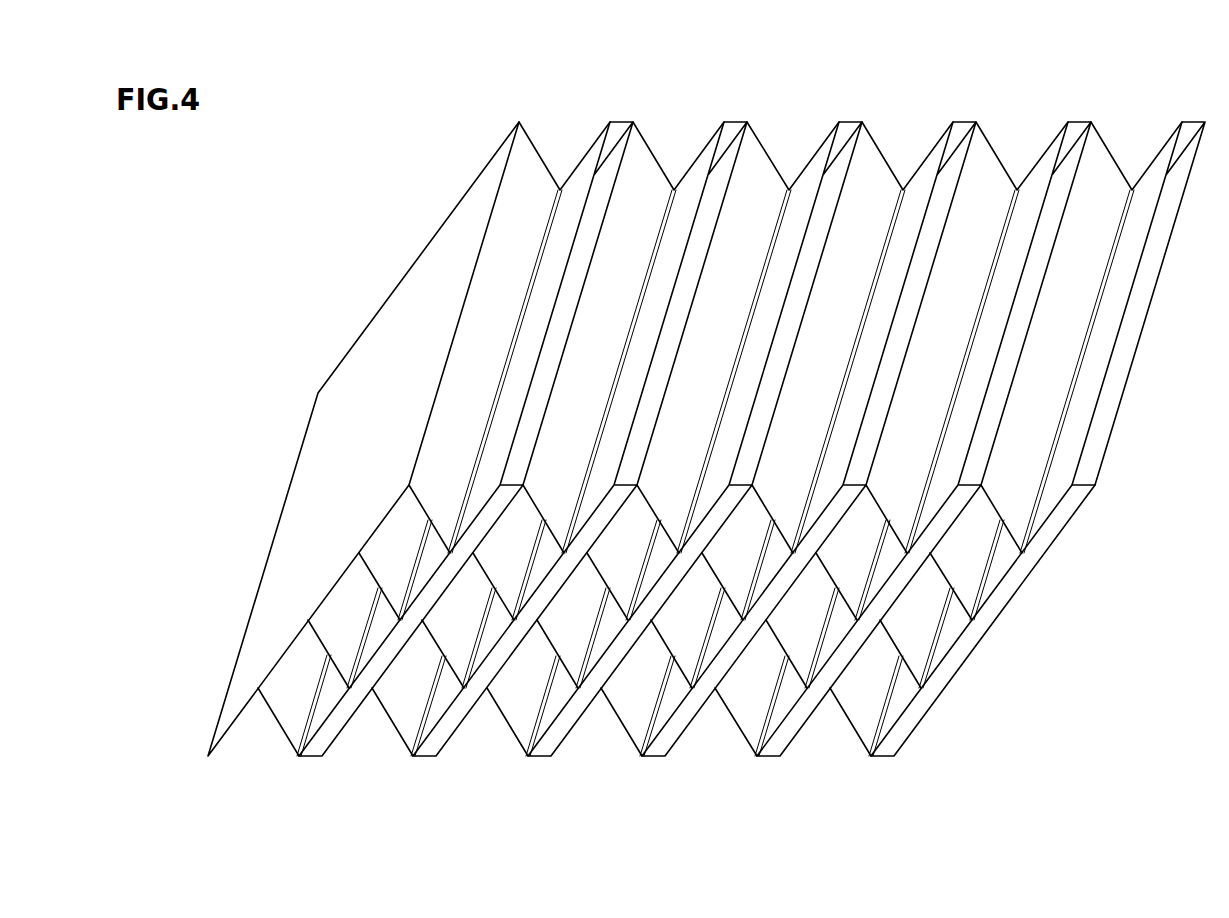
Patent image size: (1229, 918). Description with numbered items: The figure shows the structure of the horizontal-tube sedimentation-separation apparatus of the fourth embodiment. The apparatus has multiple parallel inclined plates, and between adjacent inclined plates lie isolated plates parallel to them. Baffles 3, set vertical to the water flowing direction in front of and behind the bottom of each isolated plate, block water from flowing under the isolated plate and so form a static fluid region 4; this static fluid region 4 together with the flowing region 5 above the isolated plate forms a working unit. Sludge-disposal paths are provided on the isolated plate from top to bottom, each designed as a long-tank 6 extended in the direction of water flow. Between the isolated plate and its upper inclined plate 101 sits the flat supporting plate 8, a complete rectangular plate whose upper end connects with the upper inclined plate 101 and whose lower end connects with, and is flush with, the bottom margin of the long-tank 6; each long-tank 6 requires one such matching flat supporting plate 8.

The upper inclined plate 101 is at (390, 343).
The flat supporting plate 8 is at (510, 237).
The long-tank 6 is at (988, 305).
The flowing region 5 is at (1164, 201).
The static fluid region 4 is at (1133, 313).
The baffle 3 is at (953, 657).